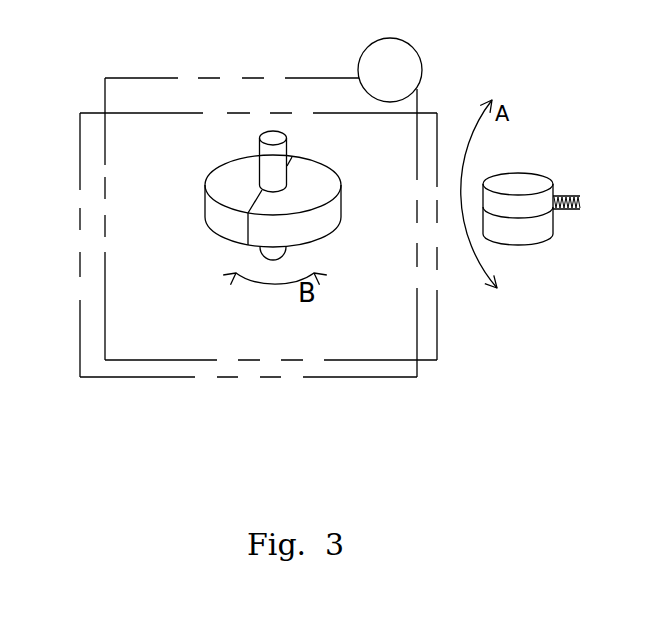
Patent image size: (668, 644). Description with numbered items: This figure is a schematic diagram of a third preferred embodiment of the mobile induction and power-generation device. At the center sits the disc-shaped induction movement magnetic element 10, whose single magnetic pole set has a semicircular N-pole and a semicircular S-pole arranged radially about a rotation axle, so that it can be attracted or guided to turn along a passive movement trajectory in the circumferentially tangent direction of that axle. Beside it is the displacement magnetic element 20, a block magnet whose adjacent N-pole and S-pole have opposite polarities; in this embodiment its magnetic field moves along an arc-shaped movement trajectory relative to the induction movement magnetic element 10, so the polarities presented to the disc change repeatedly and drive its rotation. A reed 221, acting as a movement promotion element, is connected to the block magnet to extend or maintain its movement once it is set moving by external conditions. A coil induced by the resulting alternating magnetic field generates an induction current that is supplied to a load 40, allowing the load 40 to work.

The induction movement magnetic element 10 is at (338, 160).
The displacement magnetic element 20 is at (573, 168).
The reed 221 is at (580, 203).
The load 40 is at (428, 62).